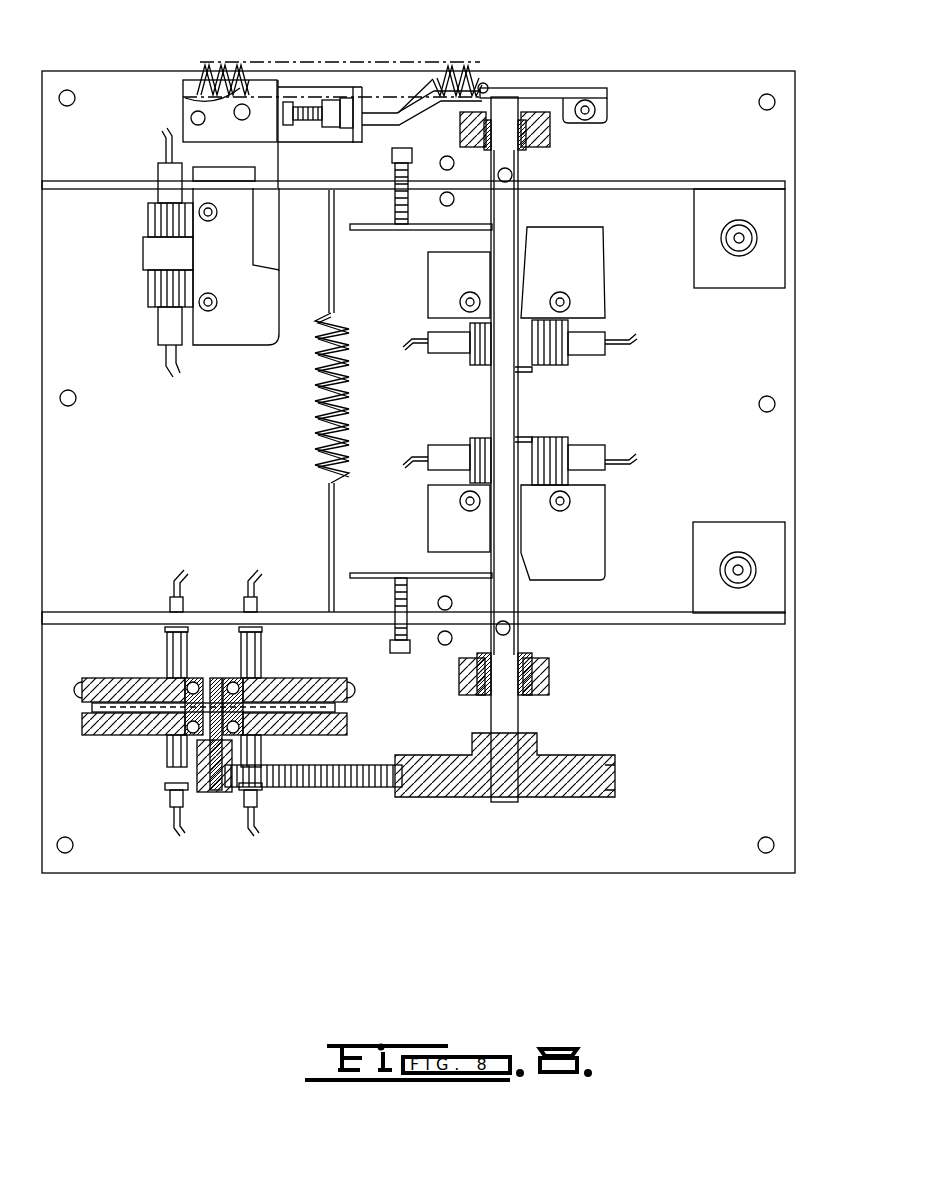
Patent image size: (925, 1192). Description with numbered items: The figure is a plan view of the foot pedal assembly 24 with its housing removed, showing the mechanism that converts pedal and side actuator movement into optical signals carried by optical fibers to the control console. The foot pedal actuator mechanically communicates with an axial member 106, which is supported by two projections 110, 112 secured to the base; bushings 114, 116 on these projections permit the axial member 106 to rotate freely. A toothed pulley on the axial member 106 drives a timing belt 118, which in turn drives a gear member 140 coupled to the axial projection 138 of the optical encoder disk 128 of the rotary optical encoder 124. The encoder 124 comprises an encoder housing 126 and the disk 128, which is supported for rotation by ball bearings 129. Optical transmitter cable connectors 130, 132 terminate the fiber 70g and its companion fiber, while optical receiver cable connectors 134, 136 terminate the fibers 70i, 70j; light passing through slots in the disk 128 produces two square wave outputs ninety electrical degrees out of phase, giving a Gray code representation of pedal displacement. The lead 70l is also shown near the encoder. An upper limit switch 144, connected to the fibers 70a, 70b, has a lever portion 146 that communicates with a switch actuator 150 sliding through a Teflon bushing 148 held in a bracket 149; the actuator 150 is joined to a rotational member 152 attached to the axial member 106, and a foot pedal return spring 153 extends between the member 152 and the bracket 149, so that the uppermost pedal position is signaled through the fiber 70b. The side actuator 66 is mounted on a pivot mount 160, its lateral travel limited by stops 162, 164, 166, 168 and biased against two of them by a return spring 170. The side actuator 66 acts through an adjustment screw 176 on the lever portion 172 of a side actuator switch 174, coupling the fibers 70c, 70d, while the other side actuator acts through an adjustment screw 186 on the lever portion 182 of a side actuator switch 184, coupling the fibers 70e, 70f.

The foot pedal assembly 24 is at (185, 901).
The side actuator 66 is at (675, 186).
The optical fiber 70a is at (168, 365).
The optical fiber 70b is at (162, 140).
The optical fiber 70c is at (633, 345).
The optical fiber 70d is at (410, 352).
The optical fiber 70e is at (628, 454).
The optical fiber 70f is at (405, 455).
The optical fiber 70g is at (172, 825).
The optical fiber 70i is at (176, 575).
The optical fiber 70j is at (250, 575).
The contact lead 70l is at (260, 835).
The axial member 106 is at (505, 790).
The projection 110 is at (540, 135).
The projection 112 is at (540, 680).
The bushing 114 is at (530, 655).
The bushing 116 is at (525, 148).
The timing belt 118 is at (370, 787).
The rotary optical encoder 124 is at (111, 747).
The encoder housing 126 is at (98, 680).
The optical encoder disk 128 is at (315, 703).
The ball bearings 129 is at (203, 678).
The optical transmitter cable connector 130 is at (170, 760).
The optical transmitter cable connector 132 is at (262, 755).
The optical receiver cable connector 134 is at (170, 660).
The optical receiver cable connector 136 is at (262, 660).
The axial projection 138 is at (216, 790).
The gear member 140 is at (204, 792).
The upper limit switch 144 is at (228, 335).
The lever portion 146 is at (282, 250).
The Teflon bushing 148 is at (378, 92).
The bracket 149 is at (305, 125).
The switch actuator 150 is at (400, 102).
The rotational member 152 is at (550, 86).
The foot pedal return spring 153 is at (457, 68).
The pivot mount 160 is at (739, 243).
The stop 162 is at (443, 158).
The stop 164 is at (447, 206).
The stop 166 is at (445, 596).
The stop 168 is at (440, 645).
The return spring 170 is at (316, 430).
The lever portion 172 is at (368, 232).
The side actuator switch 174 is at (600, 257).
The adjustment screw 176 is at (405, 215).
The lever portion 182 is at (368, 572).
The side actuator switch 184 is at (597, 510).
The adjustment screw 186 is at (403, 595).